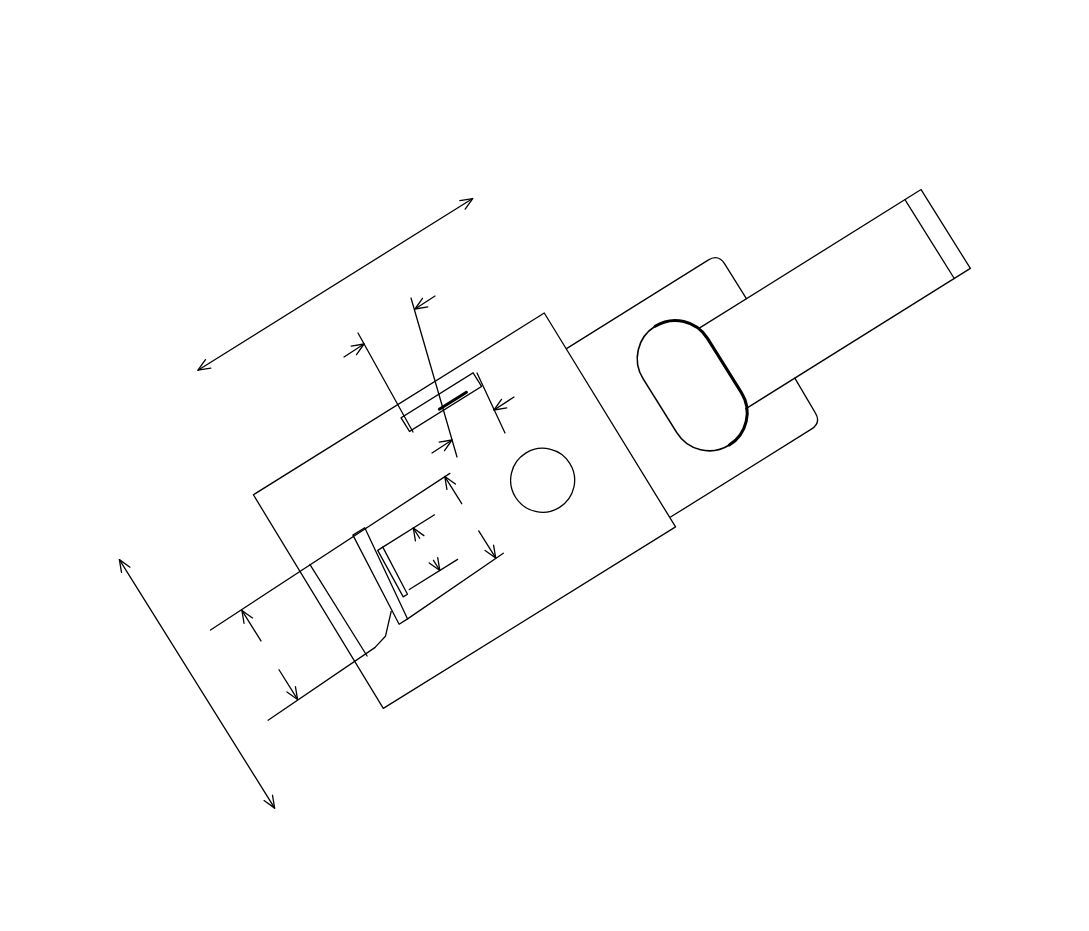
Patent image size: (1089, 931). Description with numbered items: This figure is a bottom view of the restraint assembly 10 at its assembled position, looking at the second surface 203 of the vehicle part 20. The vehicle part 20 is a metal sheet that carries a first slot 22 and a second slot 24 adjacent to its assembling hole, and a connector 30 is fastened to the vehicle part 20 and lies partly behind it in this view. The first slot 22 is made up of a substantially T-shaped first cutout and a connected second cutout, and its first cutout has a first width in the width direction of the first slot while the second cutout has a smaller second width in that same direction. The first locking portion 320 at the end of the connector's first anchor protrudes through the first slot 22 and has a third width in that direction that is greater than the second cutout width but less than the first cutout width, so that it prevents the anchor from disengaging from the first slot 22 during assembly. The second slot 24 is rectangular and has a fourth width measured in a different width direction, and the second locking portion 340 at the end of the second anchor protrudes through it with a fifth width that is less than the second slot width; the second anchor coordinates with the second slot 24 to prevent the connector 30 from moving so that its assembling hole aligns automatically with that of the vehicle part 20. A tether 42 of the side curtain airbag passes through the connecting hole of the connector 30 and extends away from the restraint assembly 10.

The restraint assembly 10 is at (830, 162).
The vehicle part 20 is at (540, 614).
The first slot 22 is at (352, 542).
The second slot 24 is at (413, 422).
The connector 30 is at (661, 284).
The tether 42 is at (880, 293).
The second surface 203 is at (597, 520).
The first locking portion 320 is at (392, 610).
The second locking portion 340 is at (470, 381).